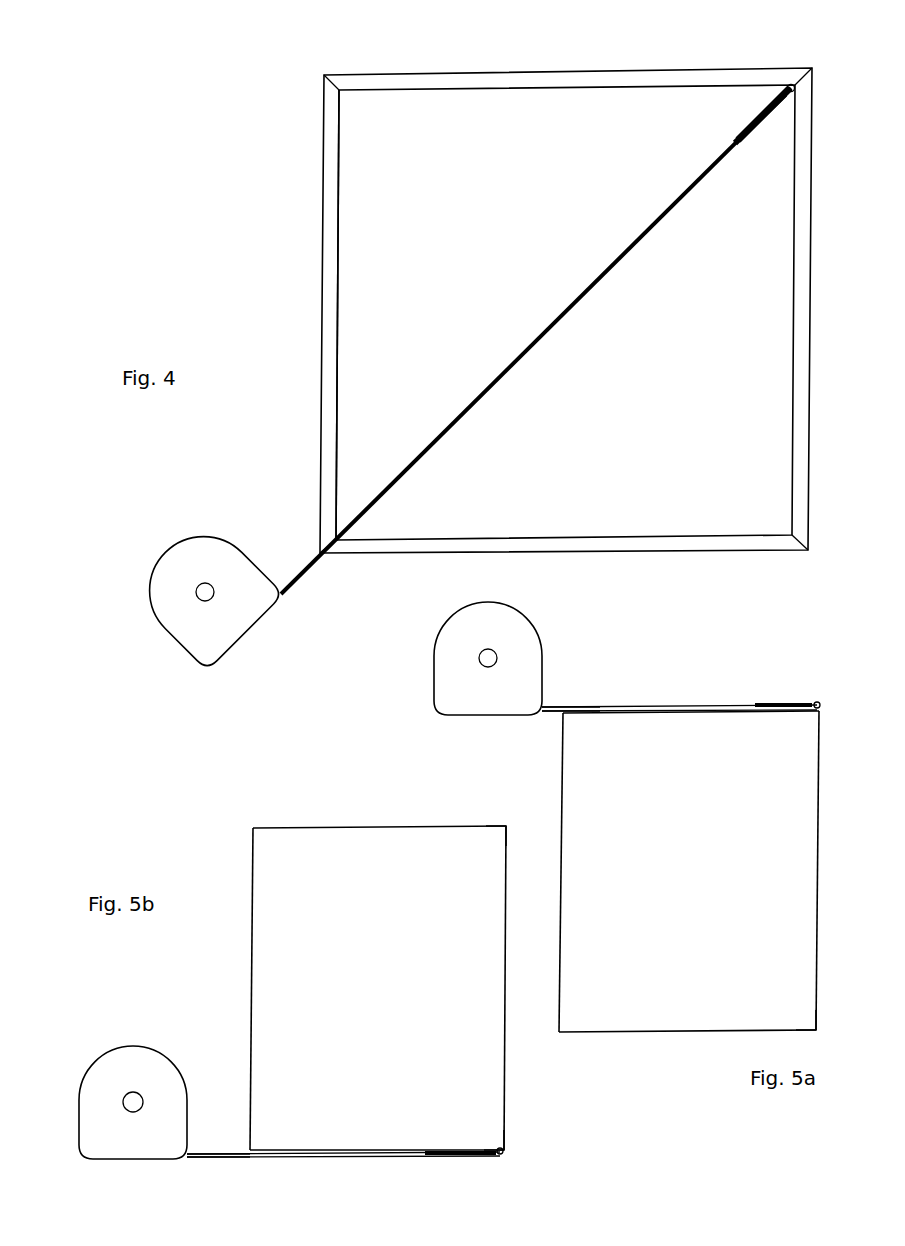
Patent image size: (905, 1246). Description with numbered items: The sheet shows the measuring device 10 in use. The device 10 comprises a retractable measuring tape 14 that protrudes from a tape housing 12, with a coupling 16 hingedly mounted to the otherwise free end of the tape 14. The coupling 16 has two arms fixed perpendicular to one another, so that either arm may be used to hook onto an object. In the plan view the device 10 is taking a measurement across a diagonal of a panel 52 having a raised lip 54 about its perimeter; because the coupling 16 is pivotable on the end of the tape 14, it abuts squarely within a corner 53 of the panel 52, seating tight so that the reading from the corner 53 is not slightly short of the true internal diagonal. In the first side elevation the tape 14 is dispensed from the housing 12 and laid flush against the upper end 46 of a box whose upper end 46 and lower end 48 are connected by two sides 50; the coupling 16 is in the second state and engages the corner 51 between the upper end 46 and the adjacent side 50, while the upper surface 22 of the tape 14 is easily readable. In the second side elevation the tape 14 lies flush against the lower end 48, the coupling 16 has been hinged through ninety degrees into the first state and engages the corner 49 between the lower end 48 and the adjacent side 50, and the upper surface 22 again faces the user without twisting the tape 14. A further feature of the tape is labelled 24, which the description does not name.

In FIG. 4, the measuring device 10 is at (296, 522).
In FIG. 5A, the measuring device 10 is at (683, 682).
In FIG. 5B, the measuring device 10 is at (186, 1032).
In FIG. 4, the tape housing 12 is at (195, 547).
In FIG. 5A, the tape housing 12 is at (444, 663).
In FIG. 5B, the tape housing 12 is at (93, 1123).
In FIG. 4, the retractable measuring tape 14 is at (510, 355).
In FIG. 5A, the retractable measuring tape 14 is at (651, 701).
In FIG. 5B, the retractable measuring tape 14 is at (305, 1160).
In FIG. 4, the coupling 16 is at (773, 83).
In FIG. 5A, the coupling 16 is at (806, 698).
In FIG. 5B, the coupling 16 is at (484, 1160).
In FIG. 5A, the upper surface 22 is at (551, 707).
In FIG. 5B, the upper surface 22 is at (231, 1153).
In FIG. 5A, the strap lower layer 24 is at (551, 712).
In FIG. 5B, the strap lower layer 24 is at (209, 1159).
In FIG. 5B, the upper end 46 is at (345, 828).
In FIG. 5A, the lower end 48 is at (662, 1030).
In FIG. 5B, the lower end 48 is at (345, 1148).
In FIG. 5A, the corner 49 is at (814, 1029).
In FIG. 5B, the corner 49 is at (497, 1148).
In FIG. 5A, the sides 50 is at (566, 820).
In FIG. 5B, the sides 50 is at (504, 981).
In FIG. 5A, the corner 51 is at (815, 714).
In FIG. 5B, the corner 51 is at (503, 829).
In FIG. 4, the panel 52 is at (540, 310).
In FIG. 4, the corner 53 is at (796, 90).
In FIG. 4, the raised lip 54 is at (332, 325).